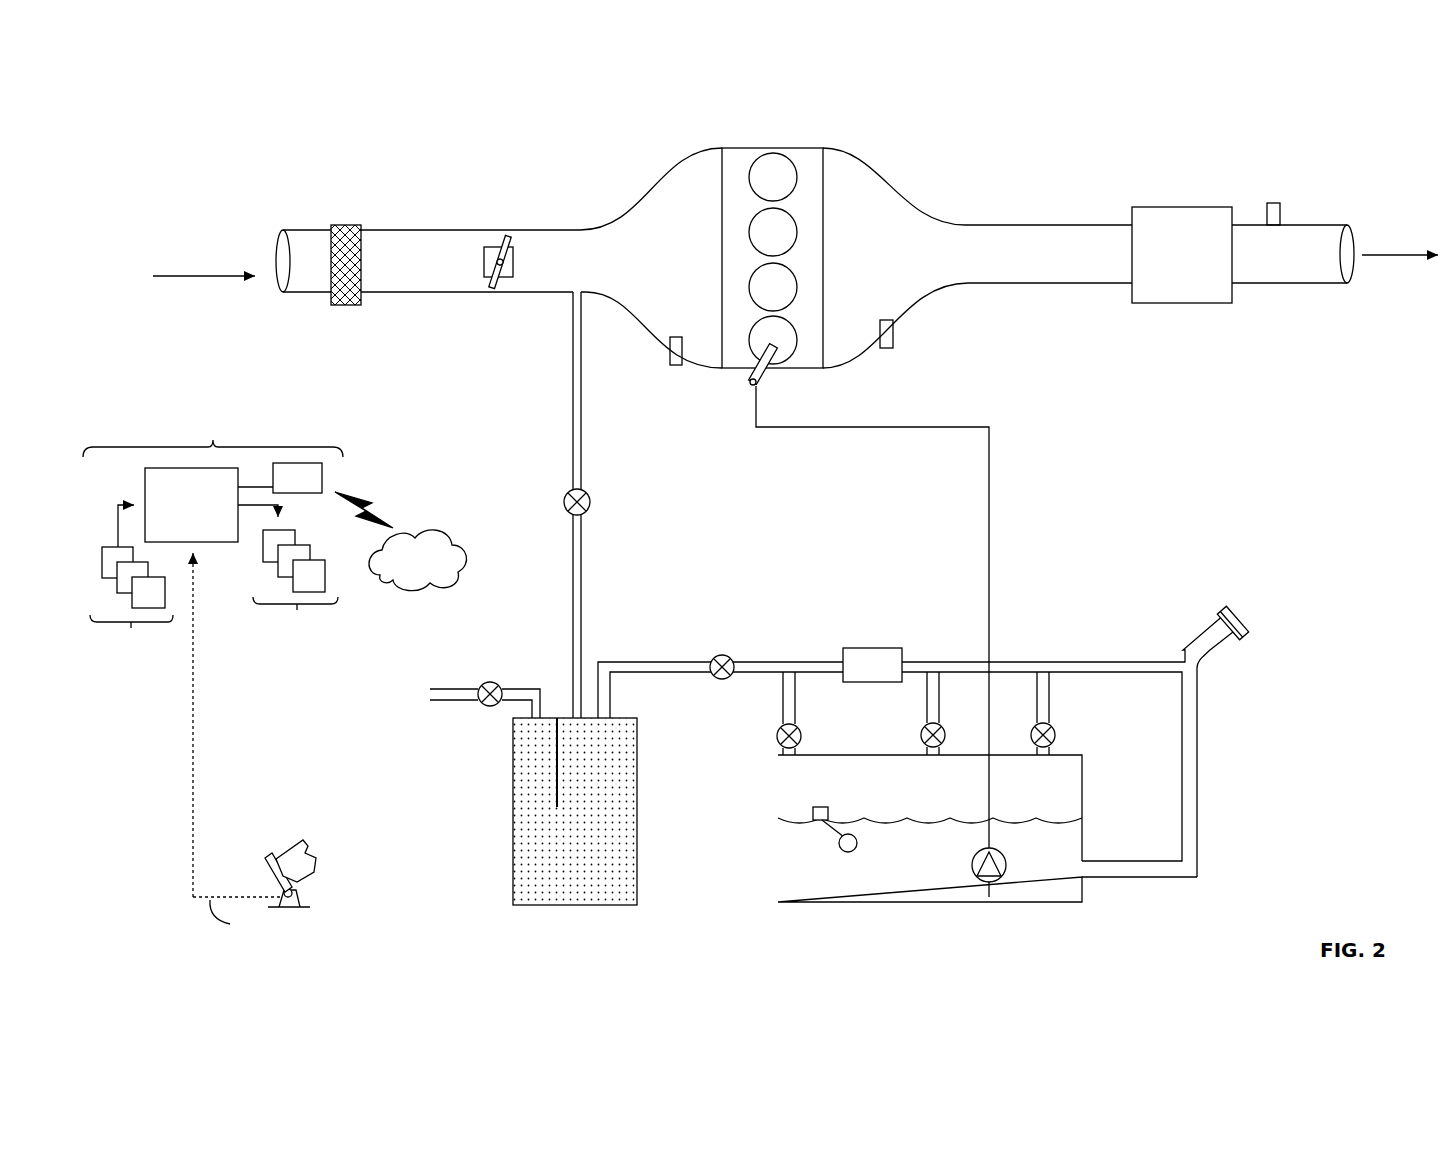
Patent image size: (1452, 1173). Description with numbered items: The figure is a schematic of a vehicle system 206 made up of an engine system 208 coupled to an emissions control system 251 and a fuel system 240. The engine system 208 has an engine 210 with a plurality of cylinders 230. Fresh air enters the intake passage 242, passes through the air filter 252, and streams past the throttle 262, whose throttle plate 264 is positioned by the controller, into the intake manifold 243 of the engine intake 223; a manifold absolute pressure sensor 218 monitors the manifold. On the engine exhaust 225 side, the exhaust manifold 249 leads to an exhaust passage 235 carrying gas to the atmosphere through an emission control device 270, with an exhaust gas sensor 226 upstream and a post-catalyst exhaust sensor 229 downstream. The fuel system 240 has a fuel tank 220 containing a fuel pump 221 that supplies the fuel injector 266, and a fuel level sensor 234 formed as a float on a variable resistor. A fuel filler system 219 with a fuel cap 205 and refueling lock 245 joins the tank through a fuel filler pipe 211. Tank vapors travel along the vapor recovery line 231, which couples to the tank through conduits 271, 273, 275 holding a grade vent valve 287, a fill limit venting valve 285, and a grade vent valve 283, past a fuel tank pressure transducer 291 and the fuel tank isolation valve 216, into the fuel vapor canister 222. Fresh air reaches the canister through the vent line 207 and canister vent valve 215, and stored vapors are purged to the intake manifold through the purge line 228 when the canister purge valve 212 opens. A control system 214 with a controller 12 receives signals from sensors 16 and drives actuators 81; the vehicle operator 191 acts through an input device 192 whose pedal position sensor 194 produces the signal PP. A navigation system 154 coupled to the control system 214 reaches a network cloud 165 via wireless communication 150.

The vehicle system 206 is at (177, 149).
The intake passage 242 is at (306, 294).
The air filter 252 is at (352, 224).
The throttle 262 is at (517, 266).
The throttle plate 264 is at (505, 292).
The engine intake 223 is at (643, 178).
The intake manifold 243 is at (676, 261).
The exhaust manifold 249 is at (871, 261).
The engine 210 is at (824, 303).
The cylinders 230 is at (797, 177).
The engine exhaust 225 is at (946, 186).
The engine system 208 is at (1049, 163).
The exhaust passage 235 is at (1056, 289).
The emission control device 270 is at (1182, 255).
The post-catalyst exhaust sensor 229 is at (1276, 203).
The manifold absolute pressure sensor 218 is at (670, 343).
The exhaust gas sensor 226 is at (893, 330).
The fuel injector 266 is at (766, 384).
The purge line 228 is at (582, 436).
The canister purge valve 212 is at (591, 502).
The emissions control system 251 is at (687, 566).
The control system 214 is at (213, 421).
The controller 12 is at (191, 505).
The navigation system 154 is at (280, 478).
The wireless communication 150 is at (362, 498).
The network cloud 165 is at (418, 560).
The sensors 16 is at (131, 589).
The actuators 81 is at (288, 580).
The input device 192 is at (268, 868).
The vehicle operator 191 is at (314, 862).
The pedal position sensor 194 is at (300, 893).
The fuel vapor canister 222 is at (638, 829).
The vent line 207 is at (463, 688).
The canister vent valve 215 is at (491, 682).
The vapor recovery line 231 is at (1140, 660).
The fuel tank isolation valve 216 is at (722, 655).
The fuel tank pressure transducer 291 is at (860, 648).
The conduit 271 is at (783, 690).
The grade vent valve 287 is at (800, 728).
The conduit 273 is at (927, 690).
The fill limit venting valve 285 is at (921, 735).
The conduit 275 is at (1037, 686).
The grade vent valve 283 is at (1052, 726).
The fuel tank 220 is at (1083, 793).
The fuel level sensor 234 is at (824, 807).
The fuel pump 221 is at (974, 859).
The fuel filler pipe 211 is at (1198, 812).
The fuel cap 205 is at (1228, 612).
The refueling lock 245 is at (1245, 638).
The fuel filler system 219 is at (1185, 611).
The fuel system 240 is at (1271, 823).